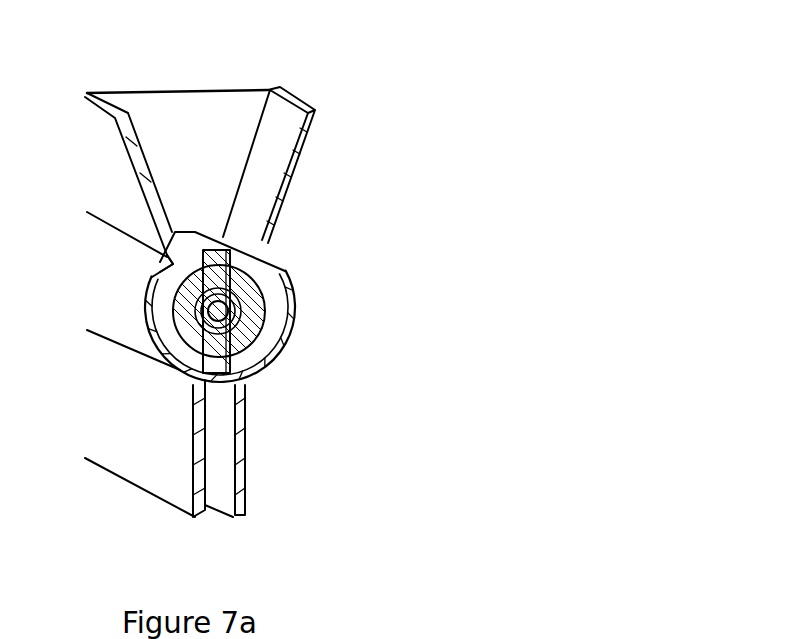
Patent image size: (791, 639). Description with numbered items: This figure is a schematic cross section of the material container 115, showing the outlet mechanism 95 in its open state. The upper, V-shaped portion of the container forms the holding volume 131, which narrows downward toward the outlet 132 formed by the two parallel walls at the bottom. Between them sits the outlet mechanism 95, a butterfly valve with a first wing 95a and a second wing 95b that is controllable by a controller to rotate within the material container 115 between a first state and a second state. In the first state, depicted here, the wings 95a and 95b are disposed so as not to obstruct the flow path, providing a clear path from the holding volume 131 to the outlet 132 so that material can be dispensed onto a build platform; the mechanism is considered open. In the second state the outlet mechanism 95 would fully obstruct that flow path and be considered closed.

The material container 115 is at (254, 127).
The holding volume 131 is at (150, 110).
The outlet 132 is at (217, 523).
The outlet mechanism 95 is at (250, 298).
The first wing 95a is at (160, 278).
The second wing 95b is at (248, 376).